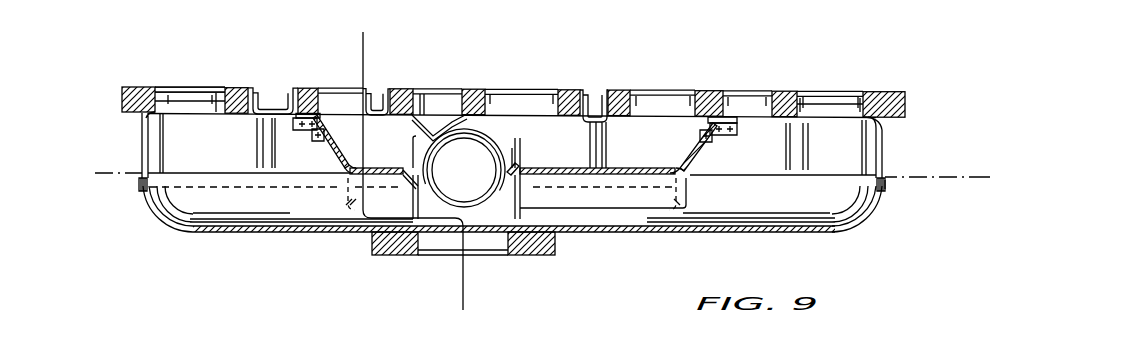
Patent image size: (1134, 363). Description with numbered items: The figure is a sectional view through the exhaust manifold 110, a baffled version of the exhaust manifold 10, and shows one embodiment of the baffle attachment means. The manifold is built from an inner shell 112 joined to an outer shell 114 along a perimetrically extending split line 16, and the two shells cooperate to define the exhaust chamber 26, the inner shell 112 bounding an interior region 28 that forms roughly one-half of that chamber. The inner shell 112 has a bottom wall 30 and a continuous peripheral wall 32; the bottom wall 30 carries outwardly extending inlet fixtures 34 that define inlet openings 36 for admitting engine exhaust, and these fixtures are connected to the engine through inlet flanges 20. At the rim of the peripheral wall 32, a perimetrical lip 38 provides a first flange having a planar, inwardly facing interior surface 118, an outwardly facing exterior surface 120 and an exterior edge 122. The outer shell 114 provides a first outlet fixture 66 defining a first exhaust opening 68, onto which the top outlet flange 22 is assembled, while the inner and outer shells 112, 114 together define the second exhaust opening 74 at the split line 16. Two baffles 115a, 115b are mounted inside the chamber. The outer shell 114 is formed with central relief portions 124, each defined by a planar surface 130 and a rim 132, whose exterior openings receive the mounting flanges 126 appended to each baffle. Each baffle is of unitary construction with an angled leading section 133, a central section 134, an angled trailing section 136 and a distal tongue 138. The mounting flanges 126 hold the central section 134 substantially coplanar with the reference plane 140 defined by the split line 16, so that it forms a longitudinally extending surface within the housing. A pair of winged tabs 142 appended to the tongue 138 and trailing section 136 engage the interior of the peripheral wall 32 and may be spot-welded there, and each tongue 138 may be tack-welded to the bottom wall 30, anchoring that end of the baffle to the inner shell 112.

The exhaust manifold 10 is at (363, 53).
The split line 16 is at (124, 195).
The inlet flanges 20 is at (237, 92).
The top outlet flange 22 is at (543, 251).
The exhaust chamber 26 is at (795, 204).
The interior region 28 is at (236, 157).
The bottom wall 30 is at (600, 122).
The continuous peripheral wall 32 is at (782, 172).
The inlet fixtures 34 is at (830, 100).
The inlet openings 36 is at (182, 81).
The perimetrical lip 38 is at (890, 167).
The first outlet fixture 66 is at (426, 258).
The first exhaust opening 68 is at (432, 268).
The second exhaust opening 74 is at (470, 142).
The exhaust manifold 110 is at (261, 258).
The inner shell 112 is at (263, 100).
The outer shell 114 is at (168, 235).
The baffle 115a is at (339, 132).
The baffle 115b is at (688, 140).
The interior surface 118 is at (147, 183).
The exterior surface 120 is at (886, 184).
The exterior edge 122 is at (887, 191).
The central relief portions 124 is at (390, 200).
The mounting flanges 126 is at (340, 183).
The planar surface 130 is at (348, 210).
The rim 132 is at (340, 203).
The angled leading section 133 is at (422, 130).
The central section 134 is at (380, 172).
The angled trailing section 136 is at (337, 153).
The distal tongue 138 is at (299, 113).
The reference plane 140 is at (947, 177).
The winged tabs 142 is at (312, 134).